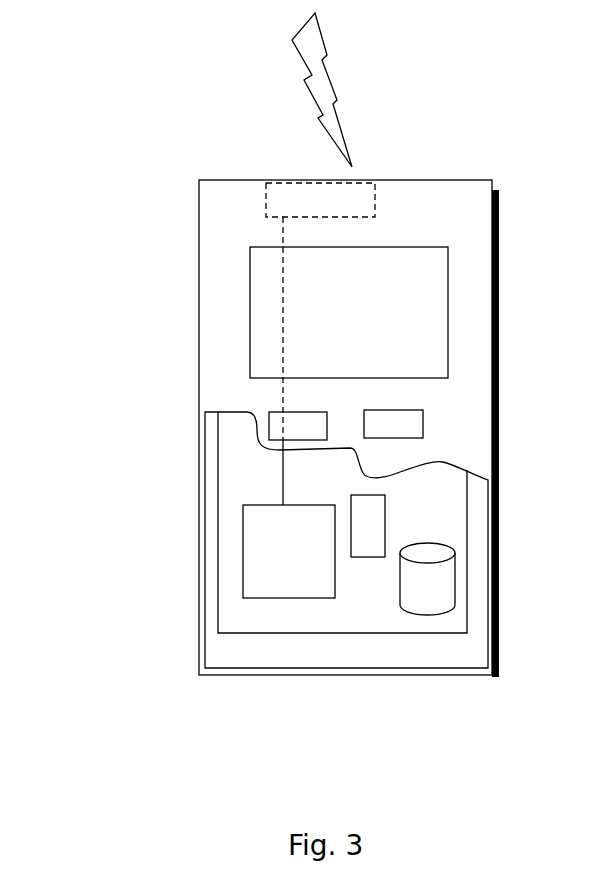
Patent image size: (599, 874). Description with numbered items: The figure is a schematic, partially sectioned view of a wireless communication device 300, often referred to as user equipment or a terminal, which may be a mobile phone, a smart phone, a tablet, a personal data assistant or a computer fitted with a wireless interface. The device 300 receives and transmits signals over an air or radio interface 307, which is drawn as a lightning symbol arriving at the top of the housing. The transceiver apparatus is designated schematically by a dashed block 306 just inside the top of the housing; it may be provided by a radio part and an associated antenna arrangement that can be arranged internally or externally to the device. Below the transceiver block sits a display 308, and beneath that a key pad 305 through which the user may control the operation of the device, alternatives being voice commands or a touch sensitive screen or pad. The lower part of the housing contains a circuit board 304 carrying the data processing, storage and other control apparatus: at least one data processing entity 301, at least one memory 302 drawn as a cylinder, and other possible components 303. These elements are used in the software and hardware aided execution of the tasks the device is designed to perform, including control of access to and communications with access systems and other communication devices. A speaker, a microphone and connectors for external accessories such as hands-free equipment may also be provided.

The communication device 300 is at (202, 220).
The data processing entity 301 is at (248, 535).
The memory 302 is at (420, 591).
The other components 303 is at (367, 510).
The circuit board 304 is at (242, 617).
The key pad 305 is at (272, 425).
The transceiver apparatus 306 is at (365, 192).
The radio interface 307 is at (352, 113).
The display 308 is at (267, 298).